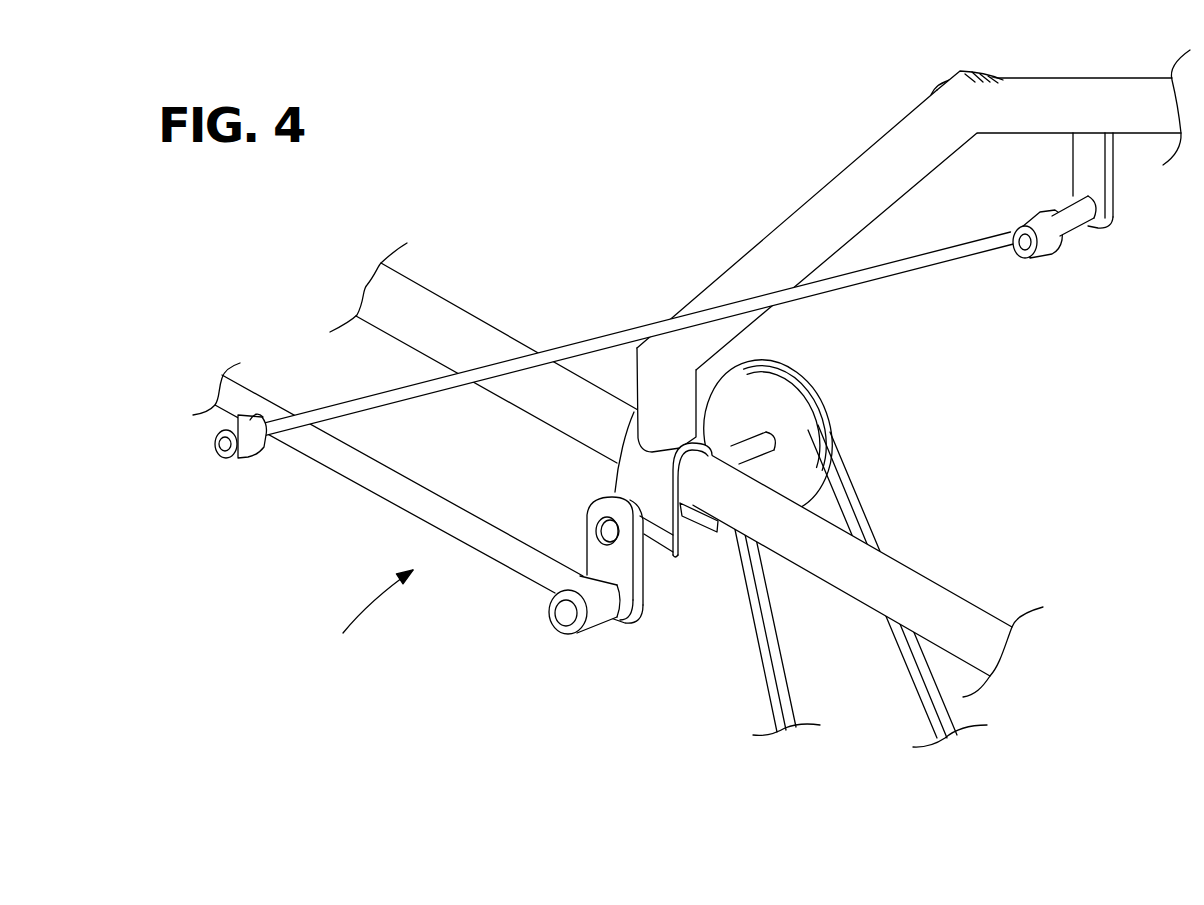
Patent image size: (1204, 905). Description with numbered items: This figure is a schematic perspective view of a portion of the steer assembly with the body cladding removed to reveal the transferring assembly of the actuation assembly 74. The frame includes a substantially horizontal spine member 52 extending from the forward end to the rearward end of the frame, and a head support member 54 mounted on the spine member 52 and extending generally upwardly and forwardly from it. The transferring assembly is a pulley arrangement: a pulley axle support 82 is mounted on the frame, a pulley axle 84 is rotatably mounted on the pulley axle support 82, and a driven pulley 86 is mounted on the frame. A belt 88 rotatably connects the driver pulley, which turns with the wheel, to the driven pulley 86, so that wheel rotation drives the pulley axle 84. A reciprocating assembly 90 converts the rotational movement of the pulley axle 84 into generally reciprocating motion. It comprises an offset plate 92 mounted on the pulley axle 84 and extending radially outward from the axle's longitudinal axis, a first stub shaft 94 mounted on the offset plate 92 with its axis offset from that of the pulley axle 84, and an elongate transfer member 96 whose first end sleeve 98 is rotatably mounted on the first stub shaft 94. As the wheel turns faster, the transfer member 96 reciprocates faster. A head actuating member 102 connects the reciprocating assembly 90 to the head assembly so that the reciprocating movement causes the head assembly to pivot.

The spine member 52 is at (460, 330).
The head support member 54 is at (820, 217).
The actuation assembly 74 is at (680, 600).
The pulley axle support 82 is at (622, 478).
The pulley axle 84 is at (679, 542).
The driven pulley 86 is at (790, 440).
The belt 88 is at (853, 502).
The reciprocating assembly 90 is at (363, 626).
The offset plate 92 is at (598, 558).
The first stub shaft 94 is at (550, 623).
The transfer member 96 is at (345, 462).
The first end sleeve 98 is at (617, 620).
The head actuating member 102 is at (870, 275).